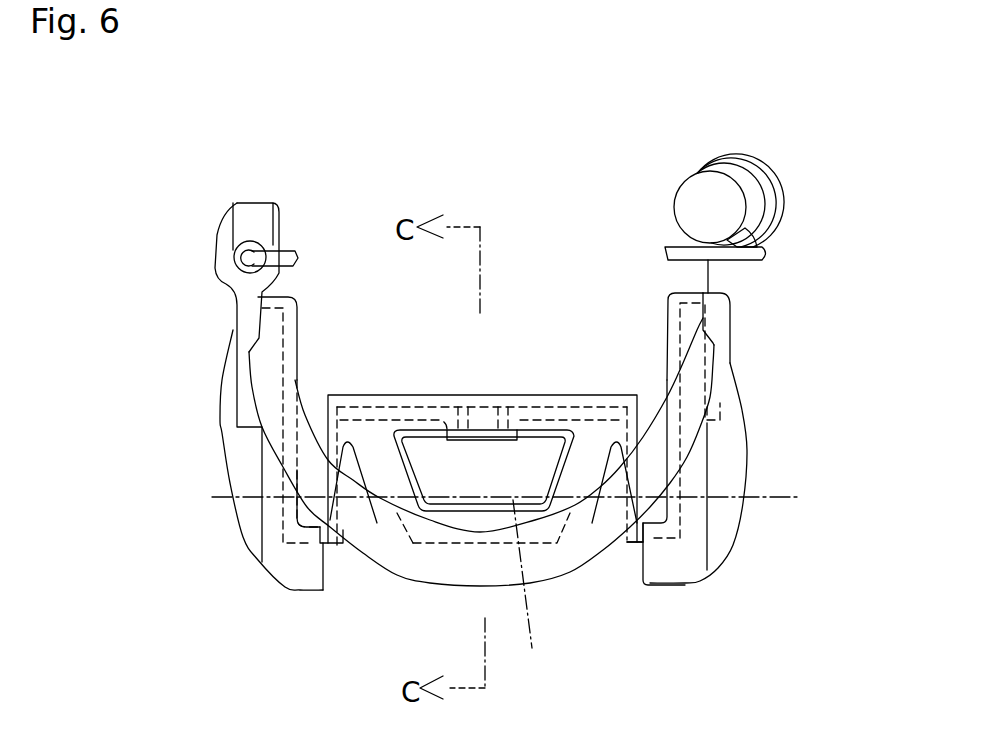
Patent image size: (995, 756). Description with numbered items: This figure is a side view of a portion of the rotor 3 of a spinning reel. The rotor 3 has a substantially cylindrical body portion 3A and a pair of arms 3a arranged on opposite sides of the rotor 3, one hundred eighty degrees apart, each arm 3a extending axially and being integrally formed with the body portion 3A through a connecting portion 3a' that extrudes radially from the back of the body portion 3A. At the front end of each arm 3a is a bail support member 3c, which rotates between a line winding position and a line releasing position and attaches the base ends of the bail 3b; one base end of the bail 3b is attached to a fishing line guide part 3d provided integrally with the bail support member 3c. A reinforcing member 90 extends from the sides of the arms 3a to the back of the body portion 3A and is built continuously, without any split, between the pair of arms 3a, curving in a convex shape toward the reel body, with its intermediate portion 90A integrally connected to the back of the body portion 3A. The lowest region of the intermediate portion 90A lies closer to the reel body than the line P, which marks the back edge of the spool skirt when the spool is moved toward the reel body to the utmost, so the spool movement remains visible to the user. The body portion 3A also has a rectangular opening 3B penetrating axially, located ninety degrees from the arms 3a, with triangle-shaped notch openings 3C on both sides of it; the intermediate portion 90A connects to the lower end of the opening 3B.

The rotor 3 is at (590, 393).
The body portion 3A is at (380, 427).
The opening 3B is at (477, 460).
The notch opening 3C is at (367, 480).
The arm 3a is at (497, 584).
The connecting portion 3a' is at (520, 598).
The bail 3b is at (730, 252).
The bail support member 3c is at (250, 307).
The fishing line guide part 3d is at (763, 205).
The reinforcing member 90 is at (692, 385).
The intermediate portion 90A is at (497, 570).
The line P is at (529, 587).